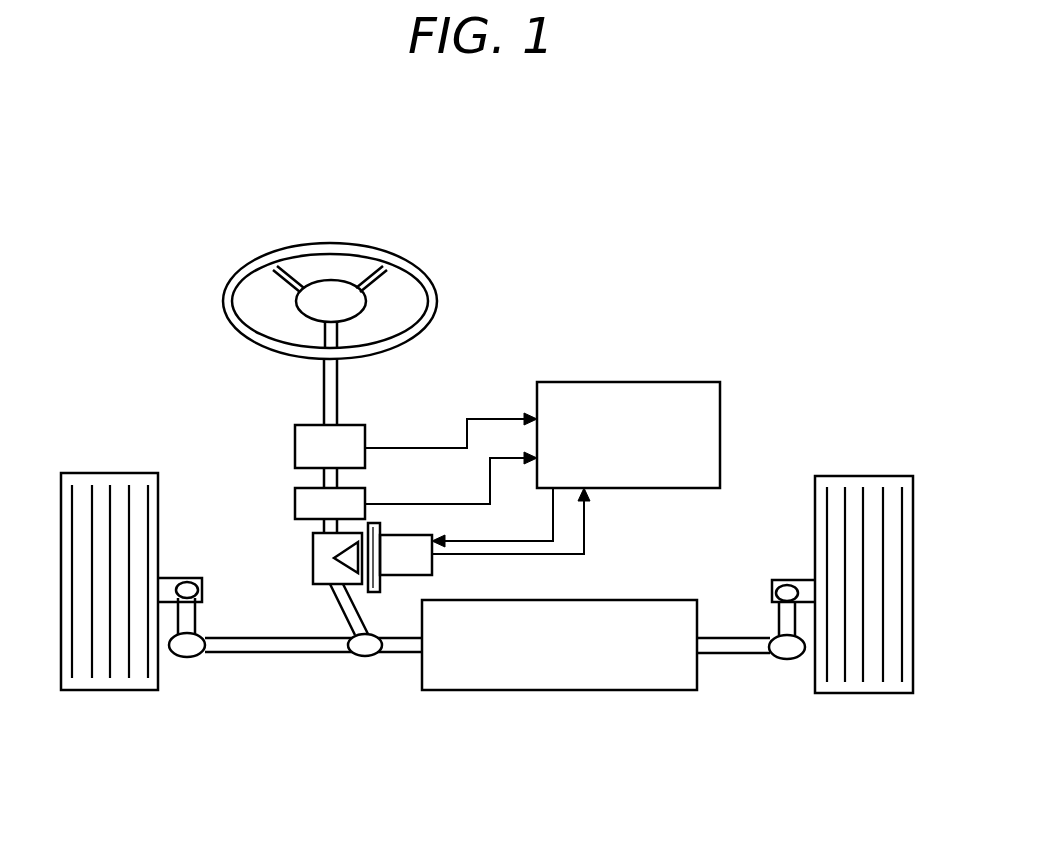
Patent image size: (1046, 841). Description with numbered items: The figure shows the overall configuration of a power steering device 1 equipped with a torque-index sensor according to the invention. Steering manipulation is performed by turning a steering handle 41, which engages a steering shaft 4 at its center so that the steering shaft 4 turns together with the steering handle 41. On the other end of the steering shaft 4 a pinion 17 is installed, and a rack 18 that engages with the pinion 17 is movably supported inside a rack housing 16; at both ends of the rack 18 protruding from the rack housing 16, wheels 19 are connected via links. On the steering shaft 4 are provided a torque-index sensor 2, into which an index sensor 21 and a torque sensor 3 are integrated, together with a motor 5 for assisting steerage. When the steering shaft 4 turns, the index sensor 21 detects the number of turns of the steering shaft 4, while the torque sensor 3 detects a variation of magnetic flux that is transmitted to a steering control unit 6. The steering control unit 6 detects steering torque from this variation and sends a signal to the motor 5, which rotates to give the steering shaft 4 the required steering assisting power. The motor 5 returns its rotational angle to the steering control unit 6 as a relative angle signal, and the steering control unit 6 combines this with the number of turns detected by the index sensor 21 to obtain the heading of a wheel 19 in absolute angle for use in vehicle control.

The vehicle steering apparatus 1 is at (619, 231).
The steering handle 41 is at (343, 243).
The steering shaft 4 is at (340, 383).
The torque-index sensor 2 is at (283, 471).
The index sensor 21 is at (295, 445).
The torque sensor 3 is at (305, 502).
The motor 5 is at (313, 560).
The steering control unit 6 is at (605, 392).
The rack housing 16 is at (600, 690).
The pinion 17 is at (368, 657).
The rack 18 is at (273, 653).
The wheels 19 is at (125, 473).